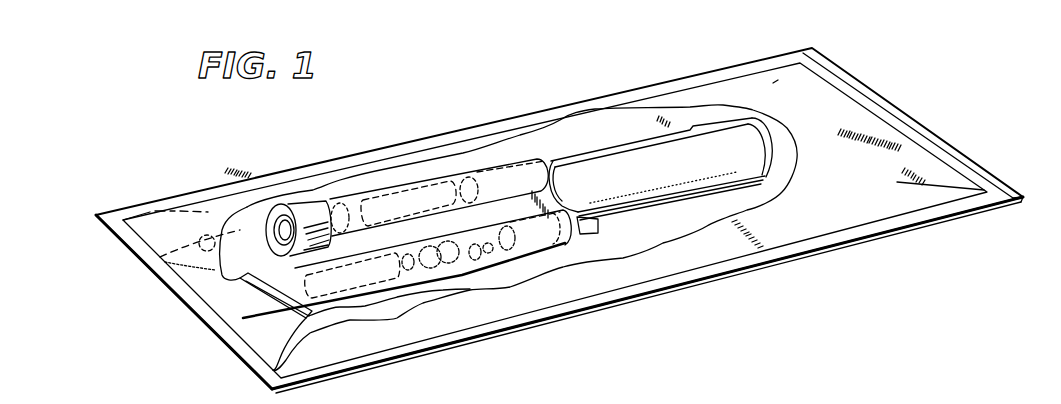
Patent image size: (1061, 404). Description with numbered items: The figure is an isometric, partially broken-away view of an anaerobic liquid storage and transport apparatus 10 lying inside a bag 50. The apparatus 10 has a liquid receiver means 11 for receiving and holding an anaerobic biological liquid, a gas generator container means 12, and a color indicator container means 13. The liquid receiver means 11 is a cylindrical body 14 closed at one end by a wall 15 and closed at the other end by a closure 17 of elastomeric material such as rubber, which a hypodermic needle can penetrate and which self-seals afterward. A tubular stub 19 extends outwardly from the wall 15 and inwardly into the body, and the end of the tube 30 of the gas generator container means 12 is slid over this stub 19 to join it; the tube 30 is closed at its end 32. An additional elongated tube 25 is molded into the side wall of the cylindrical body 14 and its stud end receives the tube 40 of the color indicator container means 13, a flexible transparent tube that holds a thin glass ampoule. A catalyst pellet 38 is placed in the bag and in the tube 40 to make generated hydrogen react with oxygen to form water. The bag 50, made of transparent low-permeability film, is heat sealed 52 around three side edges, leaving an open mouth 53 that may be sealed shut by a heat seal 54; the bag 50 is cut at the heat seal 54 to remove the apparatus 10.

The bag 50 is at (233, 172).
The liquid receiver means 11 is at (707, 122).
The gas generator container means 12 is at (462, 277).
The color indicator container means 13 is at (413, 178).
The tube 40 is at (363, 190).
The tube 30 is at (402, 285).
The anaerobic liquid storage and transport apparatus 10 is at (548, 147).
The wall 15 is at (560, 177).
The elongated tube 25 is at (613, 146).
The closure 17 is at (773, 133).
The cylindrical body 14 is at (672, 192).
The tubular stub 19 is at (585, 237).
The end 32 is at (273, 307).
The catalyst pellet 38 is at (160, 257).
The heat seal 52 is at (455, 142).
The open mouth 53 is at (873, 93).
The heat seal 54 is at (932, 152).